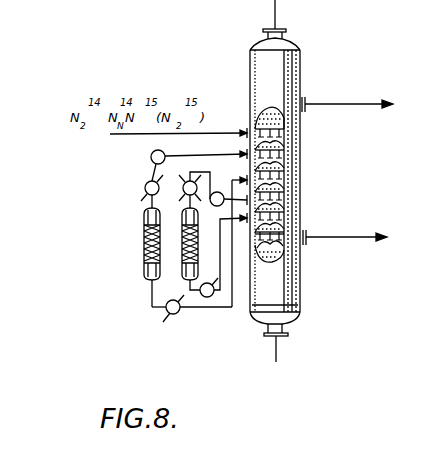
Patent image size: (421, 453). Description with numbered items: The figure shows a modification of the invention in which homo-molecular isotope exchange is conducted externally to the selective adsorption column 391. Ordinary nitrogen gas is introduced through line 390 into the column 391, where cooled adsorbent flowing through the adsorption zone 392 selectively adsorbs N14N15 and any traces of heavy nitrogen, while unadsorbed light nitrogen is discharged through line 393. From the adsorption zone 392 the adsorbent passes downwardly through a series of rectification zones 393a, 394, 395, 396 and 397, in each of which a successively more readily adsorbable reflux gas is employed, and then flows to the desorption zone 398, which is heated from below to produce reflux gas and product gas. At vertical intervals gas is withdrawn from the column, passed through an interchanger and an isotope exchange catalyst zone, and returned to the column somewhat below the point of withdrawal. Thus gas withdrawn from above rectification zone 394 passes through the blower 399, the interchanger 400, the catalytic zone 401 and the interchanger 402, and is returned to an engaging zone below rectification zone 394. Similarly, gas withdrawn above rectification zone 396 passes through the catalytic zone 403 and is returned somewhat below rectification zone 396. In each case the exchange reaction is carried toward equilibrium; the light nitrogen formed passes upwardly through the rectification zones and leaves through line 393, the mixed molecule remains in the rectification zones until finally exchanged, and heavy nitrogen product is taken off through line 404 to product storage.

The line 390 is at (122, 135).
The selective adsorption column 391 is at (299, 56).
The adsorption zone 392 is at (300, 116).
The line 393 is at (350, 93).
The rectification zone 393a is at (300, 141).
The rectification zone 394 is at (300, 164).
The rectification zone 395 is at (300, 184).
The rectification zone 396 is at (300, 204).
The rectification zone 397 is at (300, 224).
The desorption zone 398 is at (300, 258).
The blower 399 is at (162, 151).
The interchanger 400 is at (145, 188).
The catalytic zone 401 is at (144, 248).
The interchanger 402 is at (170, 314).
The catalytic zone 403 is at (182, 251).
The line 404 is at (368, 240).